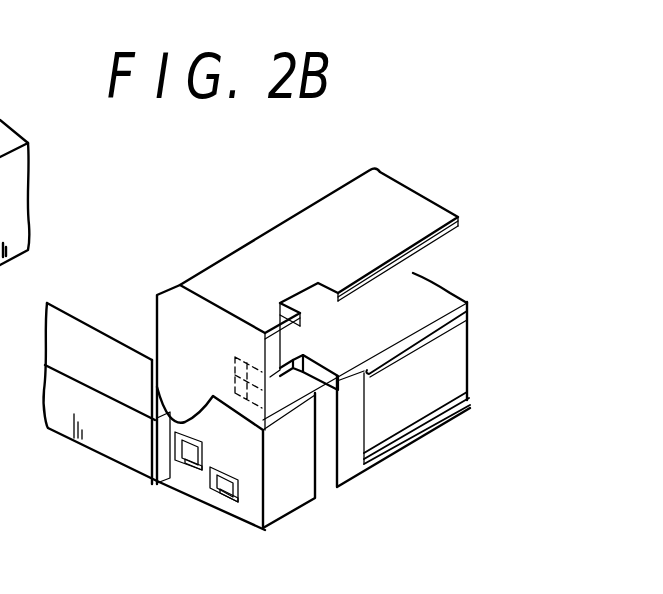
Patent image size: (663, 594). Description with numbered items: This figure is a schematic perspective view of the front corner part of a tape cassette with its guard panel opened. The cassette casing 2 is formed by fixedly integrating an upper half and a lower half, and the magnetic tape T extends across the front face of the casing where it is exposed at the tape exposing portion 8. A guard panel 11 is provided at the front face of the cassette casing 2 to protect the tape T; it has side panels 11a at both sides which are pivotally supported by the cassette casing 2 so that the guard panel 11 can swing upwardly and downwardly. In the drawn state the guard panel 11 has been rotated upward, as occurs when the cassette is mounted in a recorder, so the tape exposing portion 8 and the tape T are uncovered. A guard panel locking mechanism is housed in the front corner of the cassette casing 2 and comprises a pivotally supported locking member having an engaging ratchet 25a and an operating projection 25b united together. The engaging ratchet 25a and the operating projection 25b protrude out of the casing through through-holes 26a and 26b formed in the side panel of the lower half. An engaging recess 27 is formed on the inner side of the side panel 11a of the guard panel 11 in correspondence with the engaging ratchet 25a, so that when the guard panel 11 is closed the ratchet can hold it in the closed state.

The cassette casing 2 is at (58, 432).
The guard panel 11 is at (263, 232).
The side panel 11a is at (178, 332).
The engaging ratchet 25a is at (225, 498).
The operating projection 25b is at (170, 443).
The through-hole 26a is at (252, 525).
The through-hole 26b is at (185, 465).
The engaging recess 27 is at (270, 395).
The tape exposing portion 8 is at (412, 382).
The tape T is at (392, 415).